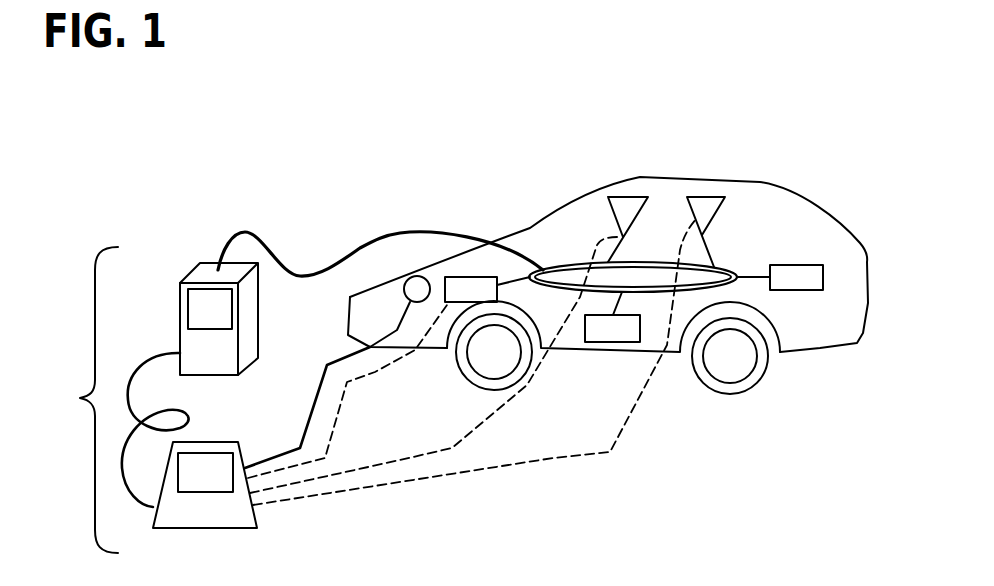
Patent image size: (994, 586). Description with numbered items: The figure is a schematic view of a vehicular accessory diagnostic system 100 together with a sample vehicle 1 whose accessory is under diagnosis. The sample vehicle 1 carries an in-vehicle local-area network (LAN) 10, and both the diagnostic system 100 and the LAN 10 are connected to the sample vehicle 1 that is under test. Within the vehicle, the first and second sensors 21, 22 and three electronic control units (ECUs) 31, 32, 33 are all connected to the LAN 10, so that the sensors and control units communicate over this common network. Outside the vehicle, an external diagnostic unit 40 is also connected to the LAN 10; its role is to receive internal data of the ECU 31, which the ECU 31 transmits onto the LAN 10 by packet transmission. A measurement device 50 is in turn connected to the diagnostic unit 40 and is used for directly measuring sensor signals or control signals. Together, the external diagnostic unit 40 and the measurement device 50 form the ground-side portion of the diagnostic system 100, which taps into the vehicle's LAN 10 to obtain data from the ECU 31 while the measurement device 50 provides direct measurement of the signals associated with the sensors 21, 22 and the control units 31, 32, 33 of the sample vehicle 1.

The sample vehicle 1 is at (856, 222).
The in-vehicle local-area network 10 is at (565, 264).
The first sensor 21 is at (627, 197).
The second sensor 22 is at (713, 196).
The electronic control unit 31 is at (458, 302).
The electronic control unit 32 is at (610, 342).
The electronic control unit 33 is at (798, 290).
The external diagnostic unit 40 is at (183, 278).
The measurement device 50 is at (258, 517).
The vehicular accessory diagnostic system 100 is at (80, 398).